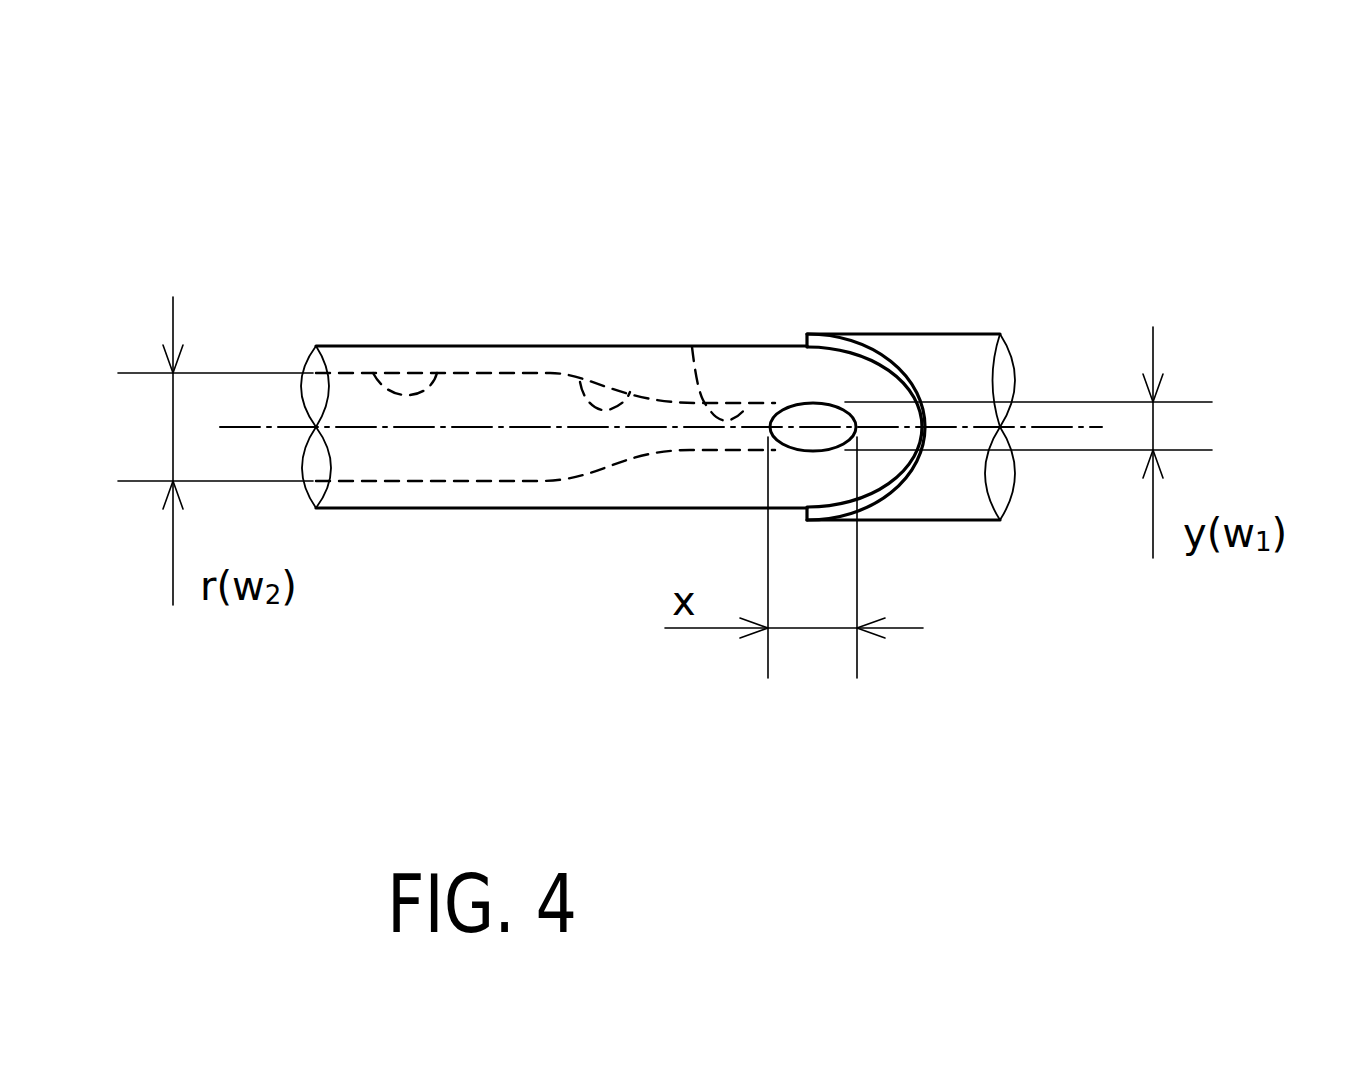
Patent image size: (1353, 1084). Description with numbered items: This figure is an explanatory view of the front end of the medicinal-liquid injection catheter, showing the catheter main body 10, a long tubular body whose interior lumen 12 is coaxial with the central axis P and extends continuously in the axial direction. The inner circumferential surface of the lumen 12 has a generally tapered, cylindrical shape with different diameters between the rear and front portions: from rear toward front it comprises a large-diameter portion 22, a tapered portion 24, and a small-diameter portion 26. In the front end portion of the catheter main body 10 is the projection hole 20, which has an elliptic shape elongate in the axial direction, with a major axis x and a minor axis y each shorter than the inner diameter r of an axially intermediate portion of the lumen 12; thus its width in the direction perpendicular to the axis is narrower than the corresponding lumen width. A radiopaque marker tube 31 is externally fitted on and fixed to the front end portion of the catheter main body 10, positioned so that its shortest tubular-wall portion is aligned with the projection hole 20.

The catheter main body 10 is at (392, 525).
The lumen 12 is at (470, 468).
The projection hole 20 is at (835, 403).
The large-diameter portion 22 is at (437, 373).
The tapered portion 24 is at (580, 382).
The small-diameter portion 26 is at (692, 347).
The marker tube 31 is at (952, 352).
The central axis P is at (1033, 427).